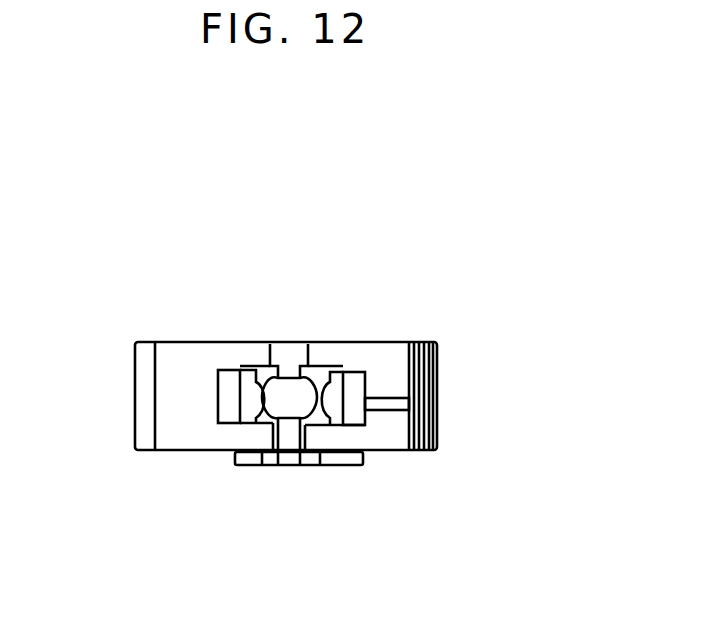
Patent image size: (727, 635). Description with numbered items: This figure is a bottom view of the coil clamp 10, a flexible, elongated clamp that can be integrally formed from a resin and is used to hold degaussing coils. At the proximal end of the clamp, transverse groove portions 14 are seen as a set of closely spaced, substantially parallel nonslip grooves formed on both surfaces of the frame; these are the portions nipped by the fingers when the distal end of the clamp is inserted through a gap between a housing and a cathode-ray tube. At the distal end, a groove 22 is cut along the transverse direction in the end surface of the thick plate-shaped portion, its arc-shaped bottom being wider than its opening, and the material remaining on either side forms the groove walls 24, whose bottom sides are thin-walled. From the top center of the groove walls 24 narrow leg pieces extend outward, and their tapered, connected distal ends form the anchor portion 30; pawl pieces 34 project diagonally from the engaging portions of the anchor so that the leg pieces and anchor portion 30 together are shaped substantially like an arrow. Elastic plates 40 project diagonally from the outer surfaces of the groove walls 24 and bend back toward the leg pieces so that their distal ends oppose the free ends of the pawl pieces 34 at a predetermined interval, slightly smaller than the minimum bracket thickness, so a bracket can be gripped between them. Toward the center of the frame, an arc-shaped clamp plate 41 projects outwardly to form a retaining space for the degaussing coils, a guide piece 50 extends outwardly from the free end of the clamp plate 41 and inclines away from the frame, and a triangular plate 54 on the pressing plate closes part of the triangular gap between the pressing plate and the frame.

The coil clamp 10 is at (492, 341).
The transverse groove portions 14 is at (442, 422).
The groove 22 is at (292, 456).
The groove walls 24 is at (300, 367).
The anchor portion 30 is at (302, 398).
The pawl pieces 34 is at (242, 365).
The elastic plates 40 is at (222, 385).
The clamp plates 41 is at (172, 432).
The guide piece 50 is at (147, 385).
The triangular plate 54 is at (237, 455).